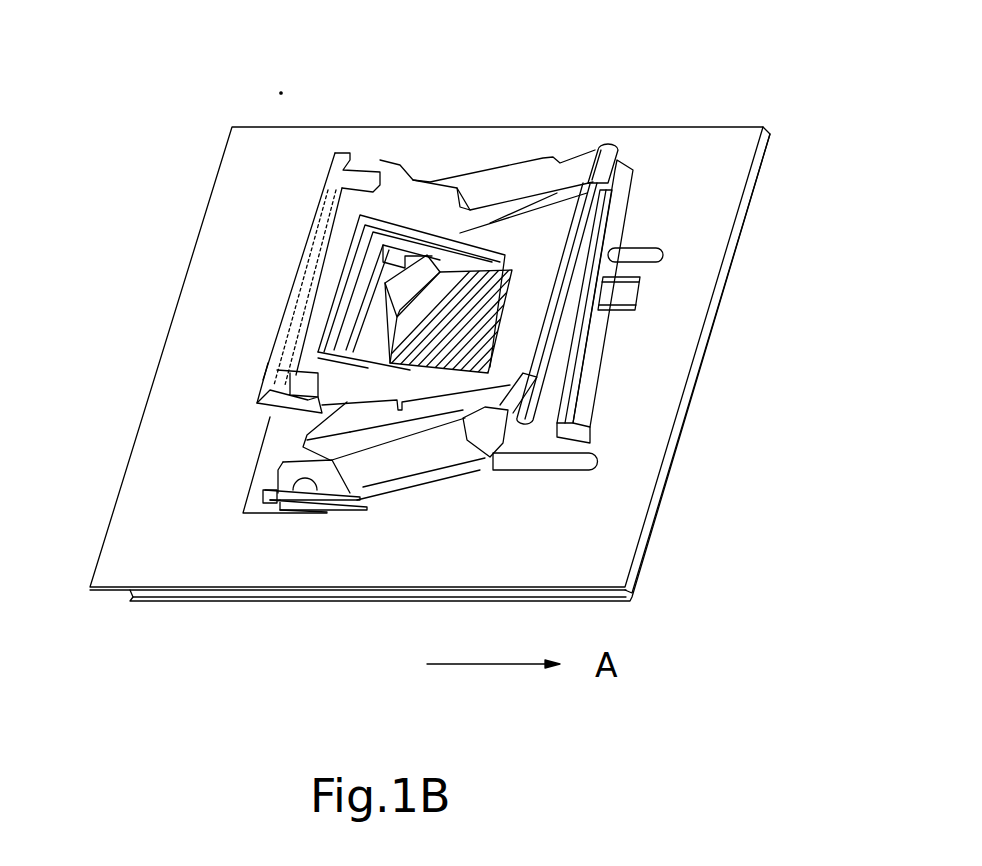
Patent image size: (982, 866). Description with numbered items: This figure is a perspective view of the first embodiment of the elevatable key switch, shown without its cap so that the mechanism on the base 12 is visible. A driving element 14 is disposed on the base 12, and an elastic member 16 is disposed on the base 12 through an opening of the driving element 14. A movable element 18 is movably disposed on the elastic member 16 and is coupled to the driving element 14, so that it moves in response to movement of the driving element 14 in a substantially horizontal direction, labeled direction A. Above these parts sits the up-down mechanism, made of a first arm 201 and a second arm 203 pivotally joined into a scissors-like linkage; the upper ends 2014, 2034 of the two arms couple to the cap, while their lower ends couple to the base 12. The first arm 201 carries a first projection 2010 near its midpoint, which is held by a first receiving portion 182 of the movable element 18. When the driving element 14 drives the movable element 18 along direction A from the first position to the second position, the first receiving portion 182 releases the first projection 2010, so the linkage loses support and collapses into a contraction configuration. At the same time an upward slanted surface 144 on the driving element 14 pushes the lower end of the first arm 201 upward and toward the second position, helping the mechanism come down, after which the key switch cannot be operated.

The base 12 is at (633, 582).
The driving element 14 is at (615, 513).
The elastic member 16 is at (490, 344).
The movable element 18 is at (400, 328).
The first receiving portion 182 is at (540, 262).
The first arm 201 is at (320, 400).
The second arm 203 is at (541, 172).
The first projection 2010 is at (508, 263).
The upper end 2014 is at (274, 384).
The upper end 2034 is at (527, 420).
The upward slanted surface 144 is at (540, 417).